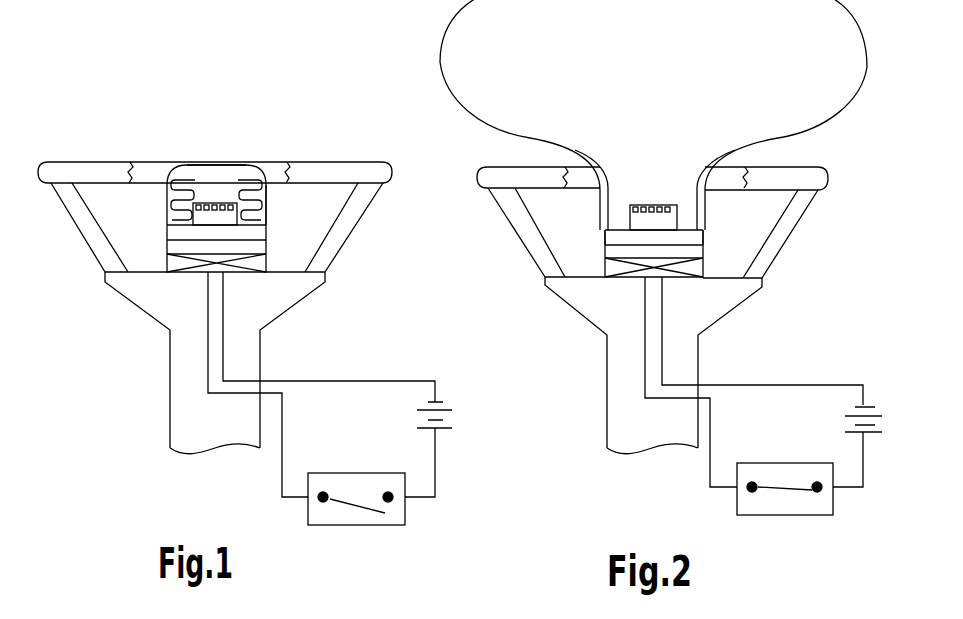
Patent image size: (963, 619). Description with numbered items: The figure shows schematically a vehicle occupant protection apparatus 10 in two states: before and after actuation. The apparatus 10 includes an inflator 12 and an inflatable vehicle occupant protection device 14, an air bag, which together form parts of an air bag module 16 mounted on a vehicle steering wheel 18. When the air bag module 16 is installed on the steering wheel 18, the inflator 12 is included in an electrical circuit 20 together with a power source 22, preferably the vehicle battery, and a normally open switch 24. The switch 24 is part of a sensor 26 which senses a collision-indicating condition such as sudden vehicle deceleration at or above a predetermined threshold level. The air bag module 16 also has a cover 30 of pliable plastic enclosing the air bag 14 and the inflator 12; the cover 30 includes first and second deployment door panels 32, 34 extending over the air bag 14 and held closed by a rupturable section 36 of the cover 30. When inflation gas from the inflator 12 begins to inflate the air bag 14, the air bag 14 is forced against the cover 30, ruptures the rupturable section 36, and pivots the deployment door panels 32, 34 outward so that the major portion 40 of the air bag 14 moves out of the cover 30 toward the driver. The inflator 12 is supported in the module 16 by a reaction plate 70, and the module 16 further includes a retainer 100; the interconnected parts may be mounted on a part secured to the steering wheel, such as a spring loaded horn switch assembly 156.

In FIG. 1, the vehicle occupant protection apparatus 10 is at (140, 147).
In FIG. 2, the vehicle occupant protection apparatus 10 is at (841, 147).
In FIG. 1, the inflator 12 is at (153, 208).
In FIG. 2, the inflator 12 is at (591, 214).
In FIG. 1, the inflatable vehicle occupant protection device 14 is at (121, 253).
In FIG. 2, the inflatable vehicle occupant protection device 14 is at (438, 100).
In FIG. 1, the air bag module 16 is at (100, 258).
In FIG. 2, the air bag module 16 is at (540, 260).
In FIG. 1, the vehicle steering wheel 18 is at (55, 162).
In FIG. 2, the vehicle steering wheel 18 is at (490, 167).
In FIG. 1, the electrical circuit 20 is at (362, 372).
In FIG. 2, the electrical circuit 20 is at (809, 375).
In FIG. 1, the power source 22 is at (445, 402).
In FIG. 2, the power source 22 is at (870, 412).
In FIG. 1, the normally open switch 24 is at (352, 507).
In FIG. 2, the normally open switch 24 is at (783, 492).
In FIG. 1, the sensor 26 is at (308, 508).
In FIG. 2, the sensor 26 is at (737, 500).
In FIG. 1, the cover 30 is at (279, 207).
In FIG. 2, the cover 30 is at (717, 211).
In FIG. 1, the first deployment door panel 32 is at (180, 165).
In FIG. 2, the first deployment door panel 32 is at (530, 183).
In FIG. 1, the second deployment door panel 34 is at (240, 165).
In FIG. 2, the second deployment door panel 34 is at (745, 175).
In FIG. 1, the rupturable section 36 is at (220, 165).
In FIG. 2, the rupturable section 36 is at (653, 217).
In FIG. 1, the major portion 40 is at (250, 178).
In FIG. 1, the reaction plate 70 is at (267, 243).
In FIG. 2, the reaction plate 70 is at (705, 250).
In FIG. 1, the retainer 100 is at (267, 232).
In FIG. 2, the retainer 100 is at (705, 237).
In FIG. 1, the spring loaded horn switch assembly 156 is at (267, 257).
In FIG. 2, the spring loaded horn switch assembly 156 is at (705, 267).